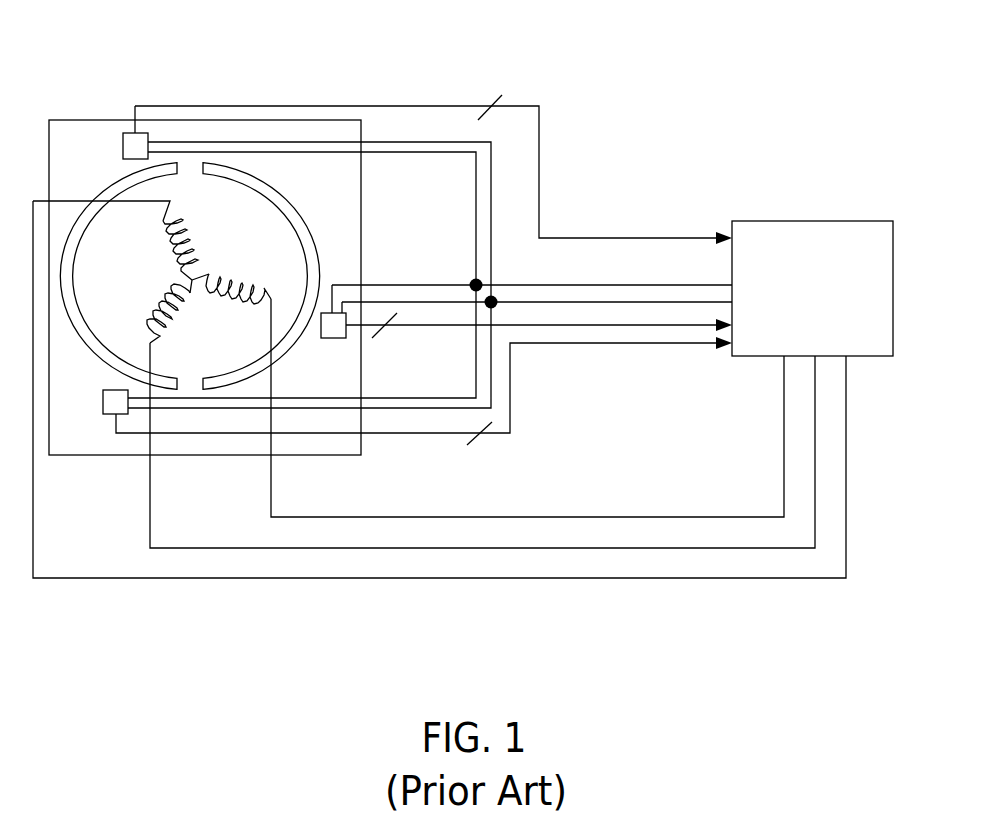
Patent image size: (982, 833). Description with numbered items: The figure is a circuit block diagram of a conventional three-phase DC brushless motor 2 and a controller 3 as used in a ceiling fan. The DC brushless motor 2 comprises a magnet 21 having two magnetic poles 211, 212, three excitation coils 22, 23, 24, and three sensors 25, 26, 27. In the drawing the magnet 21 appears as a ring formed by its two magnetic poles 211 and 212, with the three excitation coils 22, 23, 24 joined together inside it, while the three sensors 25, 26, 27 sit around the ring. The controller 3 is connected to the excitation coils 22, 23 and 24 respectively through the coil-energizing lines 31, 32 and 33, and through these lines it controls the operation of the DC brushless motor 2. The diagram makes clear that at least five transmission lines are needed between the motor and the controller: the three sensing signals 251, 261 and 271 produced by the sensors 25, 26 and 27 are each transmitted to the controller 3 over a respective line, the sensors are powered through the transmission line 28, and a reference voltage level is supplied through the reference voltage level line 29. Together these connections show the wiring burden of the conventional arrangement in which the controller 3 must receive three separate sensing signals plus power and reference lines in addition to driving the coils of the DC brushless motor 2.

The DC brushless motor 2 is at (287, 455).
The magnet 21 is at (184, 194).
The magnetic pole 211 is at (100, 187).
The magnetic pole 212 is at (217, 162).
The excitation coil 22 is at (246, 266).
The excitation coil 23 is at (130, 312).
The excitation coil 24 is at (196, 219).
The sensor 25 is at (123, 148).
The sensing signal 251 is at (493, 107).
The sensor 26 is at (321, 338).
The sensing signal 261 is at (392, 327).
The sensor 27 is at (103, 390).
The sensing signal 271 is at (480, 433).
The transmission line 28 is at (625, 285).
The reference voltage level line 29 is at (592, 302).
The controller 3 is at (867, 221).
The coil-energizing line 31 is at (543, 515).
The coil-energizing line 32 is at (620, 547).
The coil-energizing line 33 is at (697, 577).